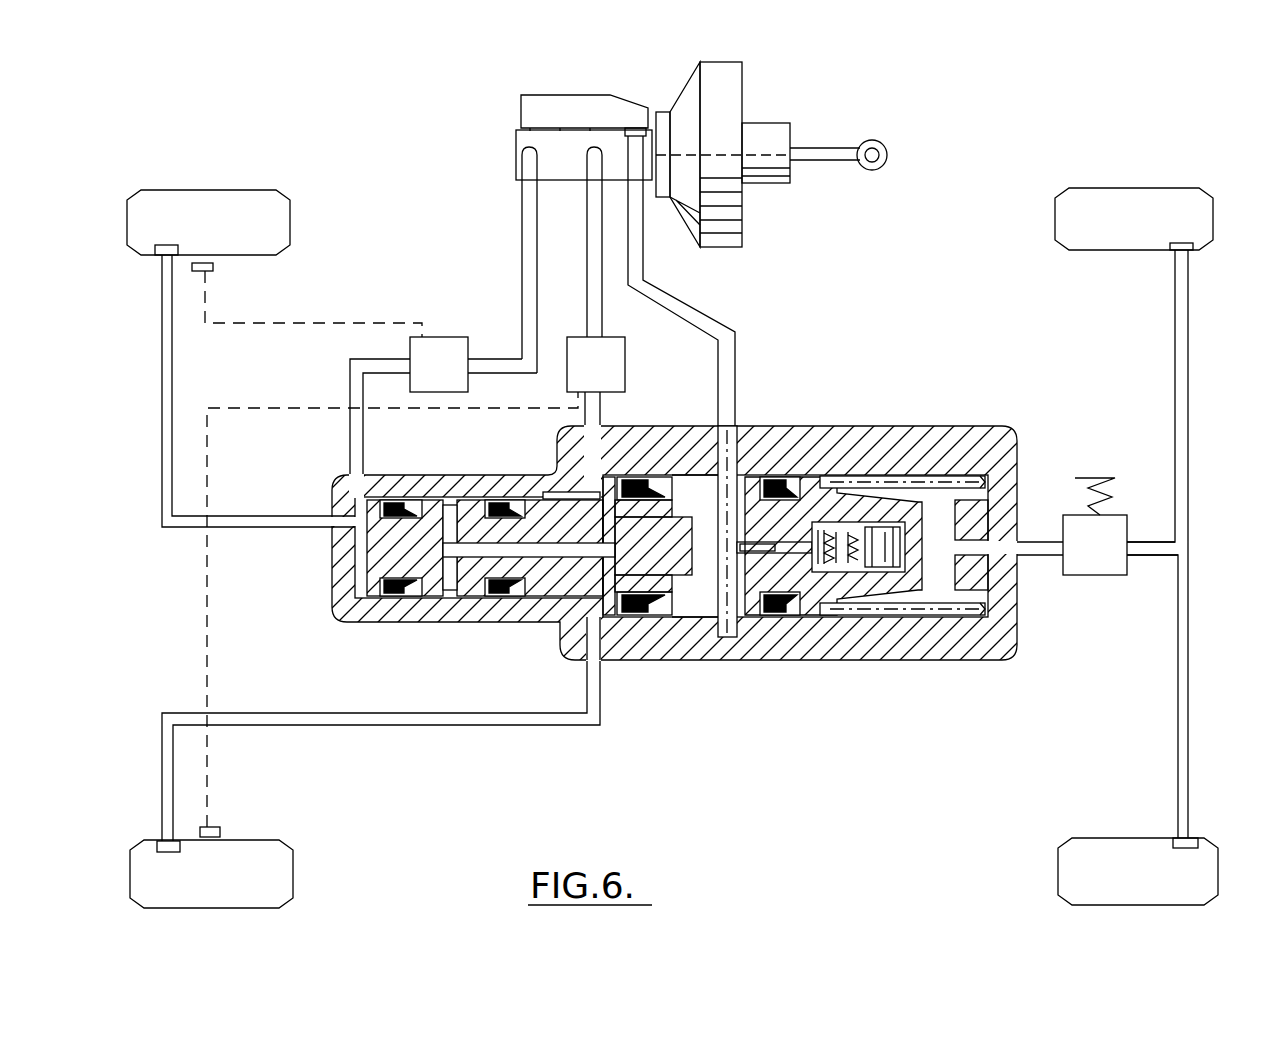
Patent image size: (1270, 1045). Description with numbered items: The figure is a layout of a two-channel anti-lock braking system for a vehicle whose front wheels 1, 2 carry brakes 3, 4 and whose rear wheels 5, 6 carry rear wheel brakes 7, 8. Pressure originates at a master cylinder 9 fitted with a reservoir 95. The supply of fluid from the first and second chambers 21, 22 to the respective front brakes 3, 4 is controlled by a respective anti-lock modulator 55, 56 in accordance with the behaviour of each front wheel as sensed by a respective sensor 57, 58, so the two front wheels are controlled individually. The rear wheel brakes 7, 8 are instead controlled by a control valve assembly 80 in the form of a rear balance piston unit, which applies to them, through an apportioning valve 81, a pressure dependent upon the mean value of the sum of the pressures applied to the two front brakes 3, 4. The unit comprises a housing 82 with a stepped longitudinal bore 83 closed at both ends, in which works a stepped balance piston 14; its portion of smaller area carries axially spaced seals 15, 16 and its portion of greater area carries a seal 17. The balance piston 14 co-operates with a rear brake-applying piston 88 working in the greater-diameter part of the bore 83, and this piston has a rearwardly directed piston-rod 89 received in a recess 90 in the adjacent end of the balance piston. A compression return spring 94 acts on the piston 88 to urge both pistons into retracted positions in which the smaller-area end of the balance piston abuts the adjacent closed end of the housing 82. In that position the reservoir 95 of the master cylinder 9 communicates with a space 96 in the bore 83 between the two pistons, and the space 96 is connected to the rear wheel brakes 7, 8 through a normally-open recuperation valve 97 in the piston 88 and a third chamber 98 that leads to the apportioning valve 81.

The front wheel 1 is at (140, 235).
The front wheel 2 is at (155, 868).
The front brake 3 is at (160, 252).
The front brake 4 is at (162, 843).
The rear wheel 5 is at (1073, 213).
The rear wheel 6 is at (1090, 858).
The rear wheel brake 7 is at (1182, 253).
The rear wheel brake 8 is at (1195, 842).
The master cylinder 9 is at (515, 133).
The stepped balance piston 14 is at (543, 570).
The seal 15 is at (410, 598).
The seal 16 is at (478, 600).
The seal 17 is at (662, 603).
The first chamber 21 is at (330, 608).
The second chamber 22 is at (543, 495).
The anti-lock modulator 55 is at (438, 343).
The anti-lock modulator 56 is at (615, 359).
The sensor 57 is at (213, 267).
The sensor 58 is at (220, 832).
The control valve assembly 80 is at (823, 427).
The apportioning valve 81 is at (1110, 530).
The housing 82 is at (778, 640).
The stepped longitudinal bore 83 is at (712, 562).
The rear brake-applying piston 88 is at (818, 590).
The piston-rod 89 is at (722, 600).
The recess 90 is at (672, 520).
The compression return spring 94 is at (935, 480).
The reservoir 95 is at (577, 103).
The space 96 is at (682, 612).
The recuperation valve 97 is at (867, 565).
The third chamber 98 is at (943, 580).